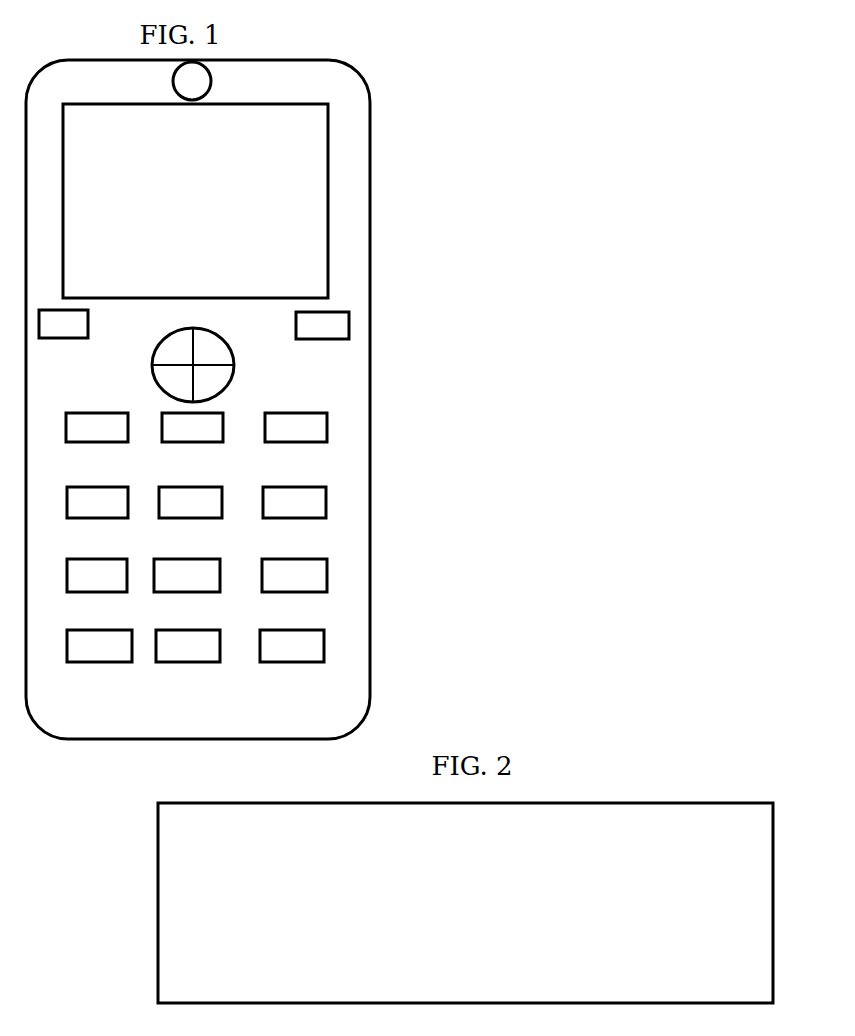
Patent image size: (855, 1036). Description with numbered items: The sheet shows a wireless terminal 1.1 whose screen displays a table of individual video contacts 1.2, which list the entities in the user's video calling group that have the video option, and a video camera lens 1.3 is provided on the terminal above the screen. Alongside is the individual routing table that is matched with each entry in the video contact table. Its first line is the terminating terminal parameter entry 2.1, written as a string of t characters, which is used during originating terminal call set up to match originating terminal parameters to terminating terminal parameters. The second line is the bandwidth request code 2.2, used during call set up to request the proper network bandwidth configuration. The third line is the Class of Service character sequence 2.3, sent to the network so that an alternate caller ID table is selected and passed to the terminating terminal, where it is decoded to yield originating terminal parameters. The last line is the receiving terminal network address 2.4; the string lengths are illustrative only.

In FIG. 1, the wireless terminal 1.1 is at (383, 473).
In FIG. 1, the individual video contacts 1.2 is at (298, 158).
In FIG. 1, the video camera lens 1.3 is at (230, 85).
In FIG. 2, the terminating terminal parameter entry 2.1 is at (517, 823).
In FIG. 2, the bandwidth request code 2.2 is at (532, 862).
In FIG. 2, the Class of Service character sequence 2.3 is at (532, 908).
In FIG. 2, the receiving terminal network address 2.4 is at (552, 940).